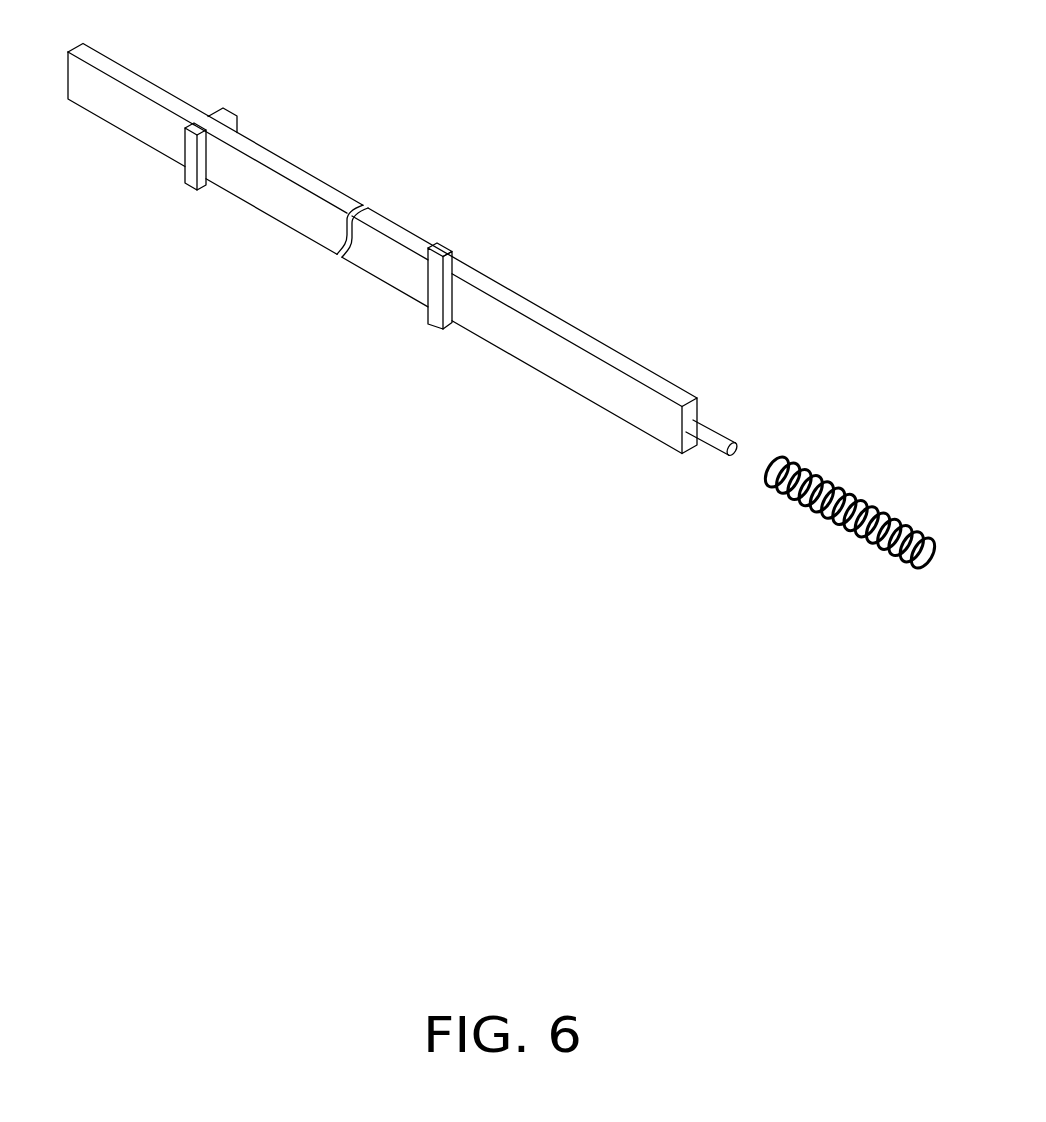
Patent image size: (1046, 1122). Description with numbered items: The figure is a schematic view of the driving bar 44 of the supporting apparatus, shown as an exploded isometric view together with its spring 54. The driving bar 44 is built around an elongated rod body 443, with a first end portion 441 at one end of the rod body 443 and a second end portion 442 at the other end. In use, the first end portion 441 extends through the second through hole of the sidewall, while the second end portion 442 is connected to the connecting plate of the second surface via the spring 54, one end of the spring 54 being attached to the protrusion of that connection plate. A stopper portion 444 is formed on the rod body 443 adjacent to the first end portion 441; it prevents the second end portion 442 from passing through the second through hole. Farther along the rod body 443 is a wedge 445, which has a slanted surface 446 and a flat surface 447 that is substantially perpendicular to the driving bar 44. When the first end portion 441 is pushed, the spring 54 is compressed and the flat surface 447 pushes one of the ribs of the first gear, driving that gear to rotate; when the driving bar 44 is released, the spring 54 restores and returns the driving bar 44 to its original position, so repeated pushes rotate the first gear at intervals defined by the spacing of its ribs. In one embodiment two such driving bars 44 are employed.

The driving bar 44 is at (430, 212).
The first end portion 441 is at (118, 73).
The second end portion 442 is at (668, 390).
The rod body 443 is at (293, 172).
The stopper portion 444 is at (187, 176).
The wedge 445 is at (438, 426).
The slanted surface 446 is at (435, 310).
The flat surface 447 is at (446, 324).
The spring 54 is at (815, 480).